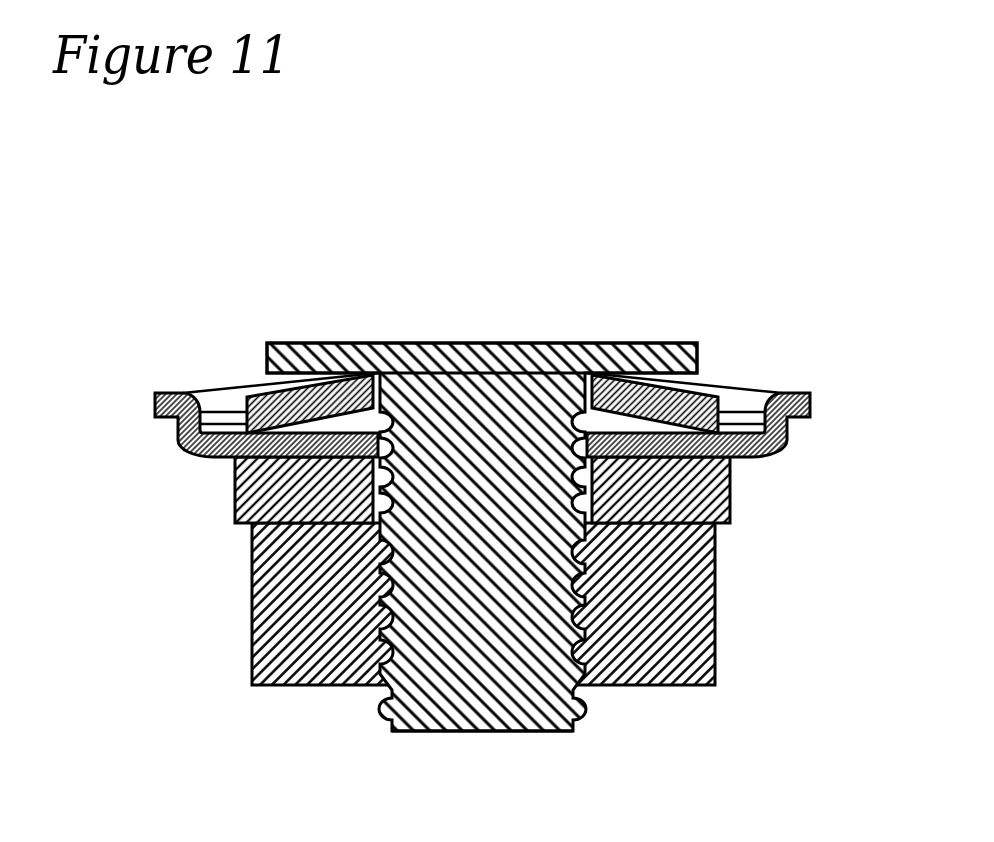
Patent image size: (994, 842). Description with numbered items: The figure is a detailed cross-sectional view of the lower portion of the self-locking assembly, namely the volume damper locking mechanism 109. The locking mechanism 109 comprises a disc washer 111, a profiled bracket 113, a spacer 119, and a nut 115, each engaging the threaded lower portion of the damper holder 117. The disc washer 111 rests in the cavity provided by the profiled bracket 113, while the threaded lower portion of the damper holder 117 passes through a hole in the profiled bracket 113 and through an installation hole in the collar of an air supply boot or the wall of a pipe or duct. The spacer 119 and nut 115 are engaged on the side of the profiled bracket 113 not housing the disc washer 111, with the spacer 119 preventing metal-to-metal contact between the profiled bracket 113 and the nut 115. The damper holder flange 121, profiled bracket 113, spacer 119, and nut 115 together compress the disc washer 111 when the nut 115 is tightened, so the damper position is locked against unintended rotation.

The volume damper locking mechanism 109 is at (582, 536).
The disc washer 111 is at (247, 397).
The profiled bracket 113 is at (177, 443).
The nut 115 is at (243, 663).
The damper holder 117 is at (582, 733).
The spacer 119 is at (735, 485).
The damper holder flange 121 is at (686, 357).